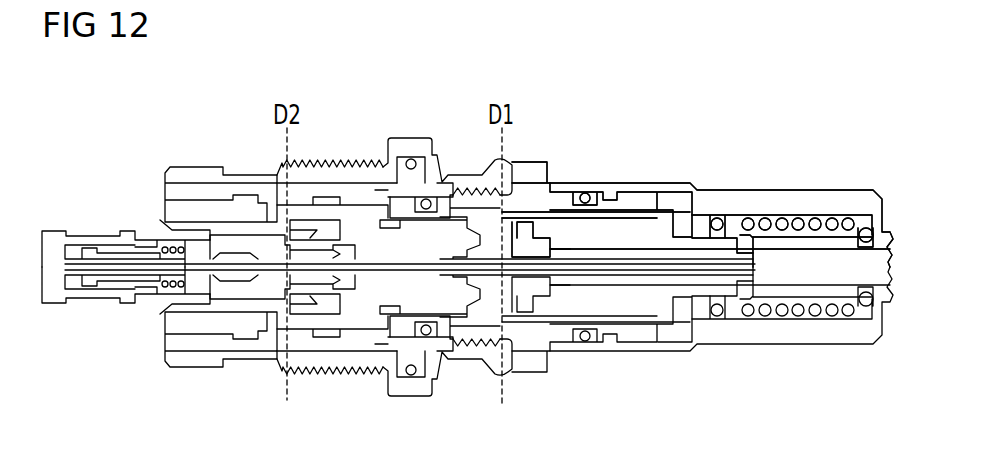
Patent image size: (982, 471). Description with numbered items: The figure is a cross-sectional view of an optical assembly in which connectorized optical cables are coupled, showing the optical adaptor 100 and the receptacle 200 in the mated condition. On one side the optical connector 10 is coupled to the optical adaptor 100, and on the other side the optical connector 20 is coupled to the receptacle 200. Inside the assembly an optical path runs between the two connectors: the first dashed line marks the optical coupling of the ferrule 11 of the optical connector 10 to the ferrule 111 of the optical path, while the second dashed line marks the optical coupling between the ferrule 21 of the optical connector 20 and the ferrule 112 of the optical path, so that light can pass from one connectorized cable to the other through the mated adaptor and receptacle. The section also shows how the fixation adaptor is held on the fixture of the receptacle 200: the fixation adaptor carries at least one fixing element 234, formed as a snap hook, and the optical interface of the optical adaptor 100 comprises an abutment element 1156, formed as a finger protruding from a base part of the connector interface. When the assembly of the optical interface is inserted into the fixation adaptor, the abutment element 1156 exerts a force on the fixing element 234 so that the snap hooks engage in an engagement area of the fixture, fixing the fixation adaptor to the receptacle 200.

The optical connector 10 is at (735, 152).
The ferrule 11 is at (565, 337).
The optical connector 20 is at (97, 222).
The ferrule 21 is at (240, 270).
The optical adaptor 100 is at (470, 108).
The ferrule 111 is at (447, 330).
The ferrule 112 is at (390, 360).
The receptacle 200 is at (365, 115).
The fixing element 234 is at (320, 197).
The abutment element 1156 is at (280, 210).